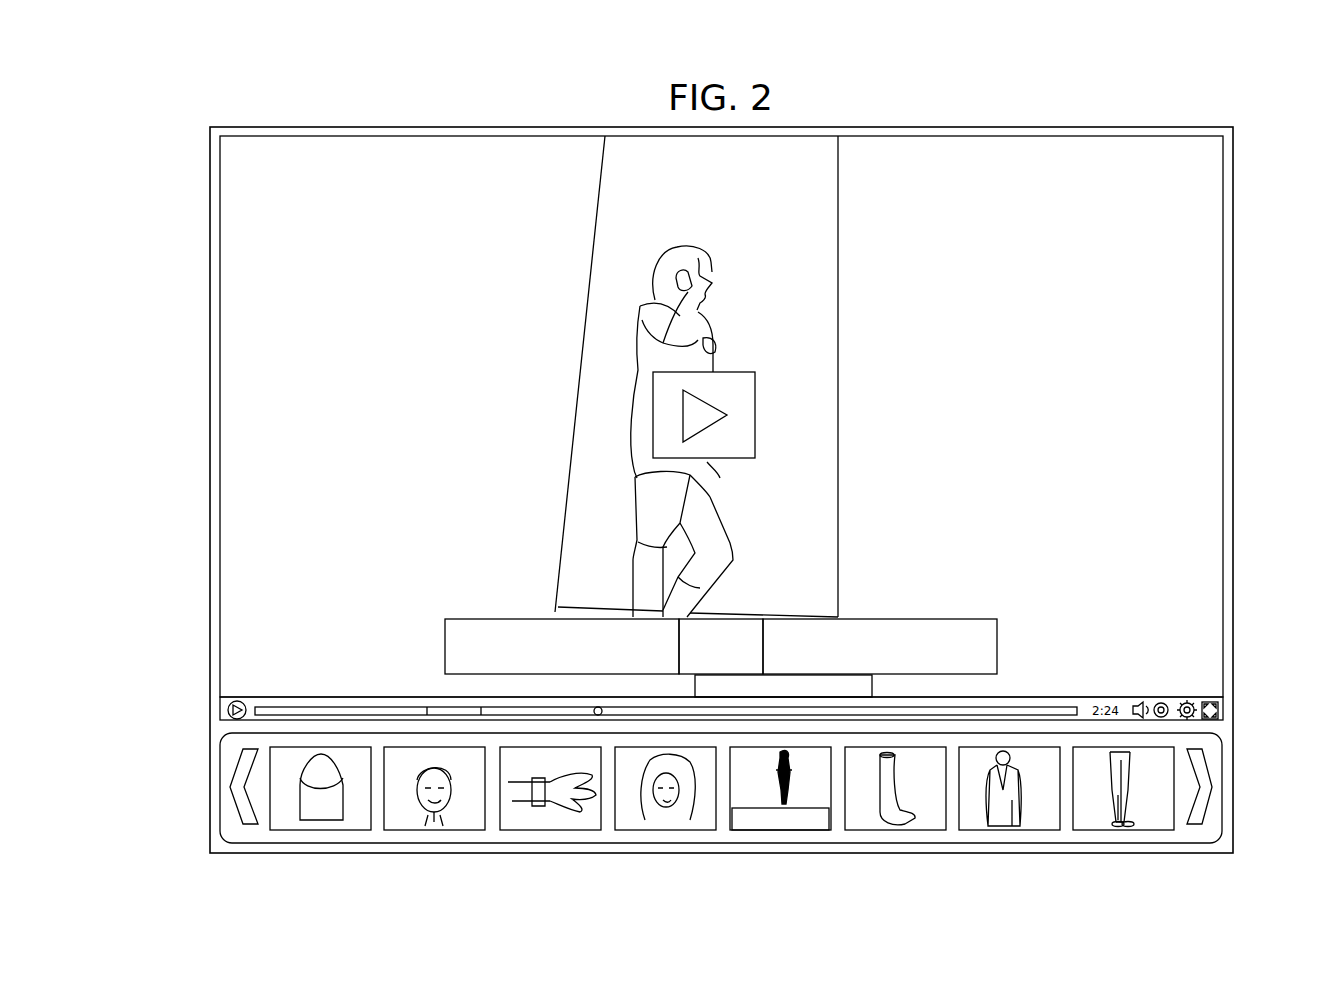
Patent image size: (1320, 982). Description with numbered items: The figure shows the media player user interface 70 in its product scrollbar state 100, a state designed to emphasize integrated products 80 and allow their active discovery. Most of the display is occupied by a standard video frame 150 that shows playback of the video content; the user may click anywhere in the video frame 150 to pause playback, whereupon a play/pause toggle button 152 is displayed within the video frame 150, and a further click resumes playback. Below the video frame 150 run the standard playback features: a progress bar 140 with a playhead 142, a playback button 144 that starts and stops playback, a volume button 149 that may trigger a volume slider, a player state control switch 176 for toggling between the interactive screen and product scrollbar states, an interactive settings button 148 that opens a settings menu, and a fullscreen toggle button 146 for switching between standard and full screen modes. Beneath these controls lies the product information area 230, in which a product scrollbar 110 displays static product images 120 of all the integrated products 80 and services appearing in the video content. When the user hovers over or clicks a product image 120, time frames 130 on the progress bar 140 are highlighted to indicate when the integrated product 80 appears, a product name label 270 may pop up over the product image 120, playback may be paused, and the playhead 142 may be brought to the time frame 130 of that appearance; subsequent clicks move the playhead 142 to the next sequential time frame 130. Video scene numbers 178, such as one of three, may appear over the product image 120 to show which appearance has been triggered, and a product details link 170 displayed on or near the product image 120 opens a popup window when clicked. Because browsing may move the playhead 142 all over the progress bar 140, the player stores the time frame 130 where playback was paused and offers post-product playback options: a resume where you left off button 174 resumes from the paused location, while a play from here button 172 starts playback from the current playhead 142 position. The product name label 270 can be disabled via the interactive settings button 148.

The product scrollbar state 100 is at (1121, 104).
The user interface 70 is at (168, 206).
The video frame 150 is at (1224, 287).
The play/pause toggle button 152 is at (755, 415).
The play from here button 172 is at (527, 618).
The resume where you left off button 174 is at (925, 625).
The product name label 270 is at (872, 686).
The progress bar 140 is at (272, 708).
The playback button 144 is at (228, 708).
The time frames 130 is at (458, 713).
The playhead 142 is at (596, 715).
The volume button 149 is at (1140, 701).
The player state control switch 176 is at (1161, 702).
The interactive settings button 148 is at (1190, 701).
The fullscreen toggle button 146 is at (1219, 710).
The product scrollbar 110 is at (220, 777).
The product information area 230 is at (210, 810).
The product images 120 is at (320, 812).
The video scene numbers 178 is at (758, 787).
The product details link 170 is at (772, 830).
The integrated products 80 is at (785, 770).